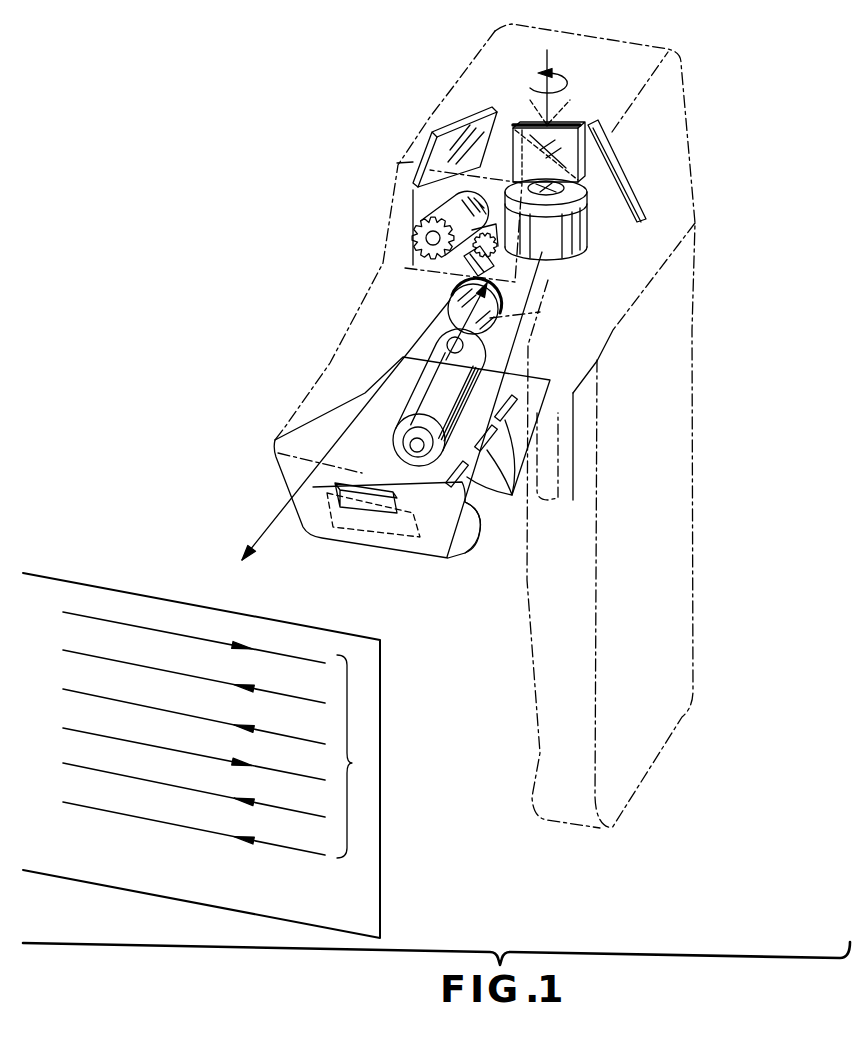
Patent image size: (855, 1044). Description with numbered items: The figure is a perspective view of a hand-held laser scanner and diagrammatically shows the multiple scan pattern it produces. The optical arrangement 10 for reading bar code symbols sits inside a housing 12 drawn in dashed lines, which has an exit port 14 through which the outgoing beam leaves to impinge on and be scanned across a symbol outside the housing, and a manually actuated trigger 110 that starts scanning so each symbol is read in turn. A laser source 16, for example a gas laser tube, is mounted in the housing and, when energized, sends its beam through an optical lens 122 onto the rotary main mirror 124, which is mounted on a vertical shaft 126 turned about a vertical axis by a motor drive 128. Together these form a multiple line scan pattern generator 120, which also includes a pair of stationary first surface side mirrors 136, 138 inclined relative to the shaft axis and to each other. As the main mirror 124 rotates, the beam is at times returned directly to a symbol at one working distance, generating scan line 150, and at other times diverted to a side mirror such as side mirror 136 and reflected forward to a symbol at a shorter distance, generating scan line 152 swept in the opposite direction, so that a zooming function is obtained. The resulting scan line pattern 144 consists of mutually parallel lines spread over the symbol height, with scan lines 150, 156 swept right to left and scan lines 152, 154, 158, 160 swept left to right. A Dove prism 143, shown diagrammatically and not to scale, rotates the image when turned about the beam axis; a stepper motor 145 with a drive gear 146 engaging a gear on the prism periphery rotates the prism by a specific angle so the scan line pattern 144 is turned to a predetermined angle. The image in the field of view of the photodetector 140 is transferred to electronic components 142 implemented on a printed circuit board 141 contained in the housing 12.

The optical arrangement 10 is at (366, 253).
The housing 12 is at (683, 500).
The exit port 14 is at (413, 198).
The laser source 16 is at (406, 400).
The manually actuated trigger 110 is at (550, 452).
The multiple line scan pattern generator 120 is at (626, 246).
The optical lens 122 is at (470, 334).
The rotary main mirror 124 is at (580, 120).
The vertical shaft 126 is at (580, 196).
The motor drive 128 is at (556, 255).
The first surface side mirror 136 is at (435, 130).
The first surface side mirror 138 is at (614, 170).
The photodetector 140 is at (363, 506).
The printed circuit board 141 is at (468, 553).
The electronic components 142 is at (510, 497).
The Dove prism 143 is at (466, 252).
The scan line pattern 144 is at (205, 755).
The stepper motor 145 is at (422, 210).
The drive gear 146 is at (411, 237).
The scan line 150 is at (96, 612).
The scan line 152 is at (92, 650).
The scan line 154 is at (92, 689).
The scan line 156 is at (94, 727).
The scan line 158 is at (92, 763).
The scan line 160 is at (92, 801).